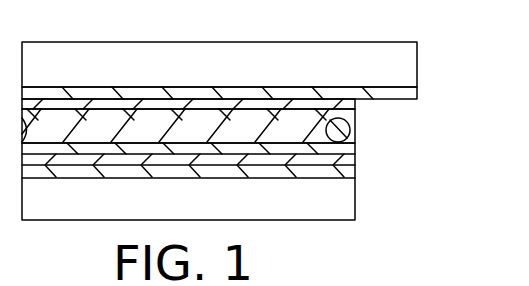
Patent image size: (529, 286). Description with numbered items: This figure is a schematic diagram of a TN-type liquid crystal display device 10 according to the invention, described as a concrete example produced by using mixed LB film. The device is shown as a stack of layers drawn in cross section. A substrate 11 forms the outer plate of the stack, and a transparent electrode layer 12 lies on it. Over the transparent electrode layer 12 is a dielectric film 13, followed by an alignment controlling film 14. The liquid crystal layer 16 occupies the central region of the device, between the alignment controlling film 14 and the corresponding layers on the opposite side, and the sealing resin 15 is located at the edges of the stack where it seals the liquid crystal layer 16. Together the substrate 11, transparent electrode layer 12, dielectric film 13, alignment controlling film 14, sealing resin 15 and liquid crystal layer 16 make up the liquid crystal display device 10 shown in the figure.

The laminated assembly 10 is at (458, 195).
The substrate 11 is at (417, 60).
The transparent electrode layer 12 is at (417, 92).
The dielectric film 13 is at (355, 100).
The alignment controlling film 14 is at (352, 134).
The sealing resin 15 is at (355, 143).
The liquid crystal layer 16 is at (138, 120).